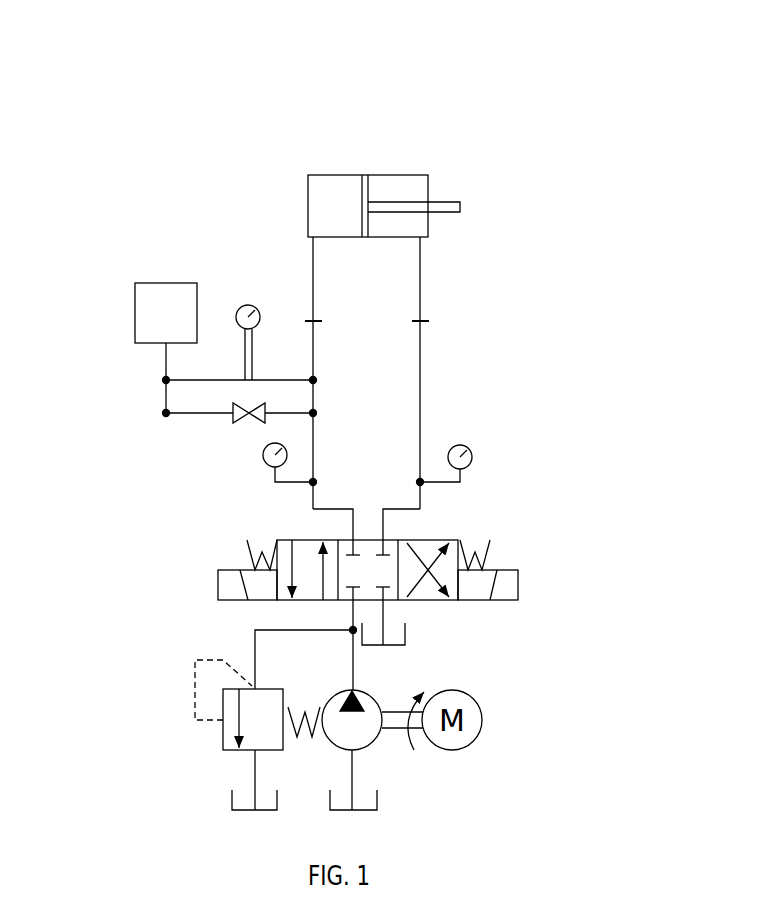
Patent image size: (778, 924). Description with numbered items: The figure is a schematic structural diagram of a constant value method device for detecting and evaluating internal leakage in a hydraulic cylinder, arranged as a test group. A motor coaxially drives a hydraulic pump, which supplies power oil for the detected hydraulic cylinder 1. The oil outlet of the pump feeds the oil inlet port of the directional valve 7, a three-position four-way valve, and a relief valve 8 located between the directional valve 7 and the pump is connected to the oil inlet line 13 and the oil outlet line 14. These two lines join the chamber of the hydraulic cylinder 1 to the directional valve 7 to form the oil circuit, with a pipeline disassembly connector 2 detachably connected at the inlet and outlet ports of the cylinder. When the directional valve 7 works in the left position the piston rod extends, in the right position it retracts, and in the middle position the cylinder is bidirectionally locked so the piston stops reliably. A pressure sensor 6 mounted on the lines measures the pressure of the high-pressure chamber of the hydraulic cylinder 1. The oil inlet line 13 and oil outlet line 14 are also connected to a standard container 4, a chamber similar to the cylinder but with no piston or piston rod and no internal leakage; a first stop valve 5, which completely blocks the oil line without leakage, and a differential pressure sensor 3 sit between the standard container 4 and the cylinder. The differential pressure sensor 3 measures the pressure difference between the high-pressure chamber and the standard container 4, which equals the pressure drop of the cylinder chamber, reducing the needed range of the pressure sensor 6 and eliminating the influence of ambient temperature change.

The hydraulic cylinder 1 is at (322, 212).
The oil inlet line 13 is at (313, 262).
The pipeline disassembly connector 2 is at (313, 321).
The differential pressure sensor 3 is at (236, 306).
The standard container 4 is at (172, 330).
The first stop valve 5 is at (238, 421).
The pressure sensor 6 is at (264, 461).
The directional valve 7 is at (228, 588).
The relief valve 8 is at (221, 727).
The oil outlet line 14 is at (424, 390).